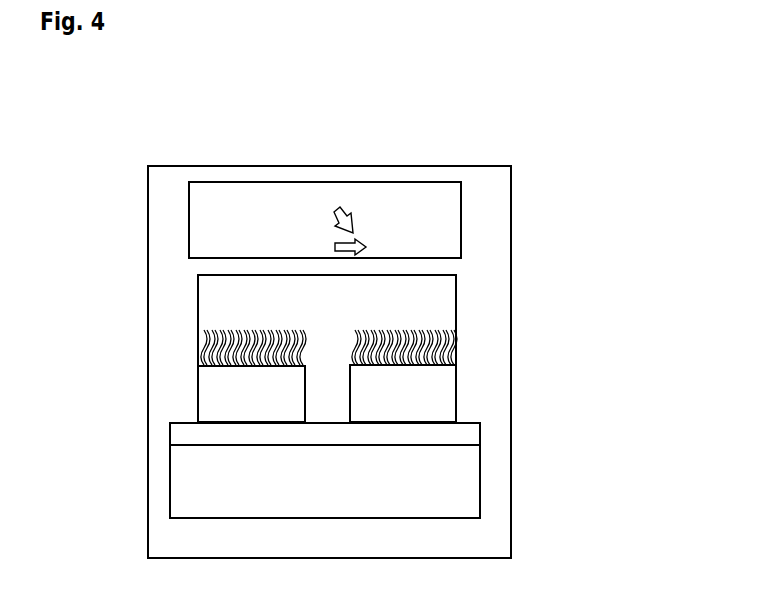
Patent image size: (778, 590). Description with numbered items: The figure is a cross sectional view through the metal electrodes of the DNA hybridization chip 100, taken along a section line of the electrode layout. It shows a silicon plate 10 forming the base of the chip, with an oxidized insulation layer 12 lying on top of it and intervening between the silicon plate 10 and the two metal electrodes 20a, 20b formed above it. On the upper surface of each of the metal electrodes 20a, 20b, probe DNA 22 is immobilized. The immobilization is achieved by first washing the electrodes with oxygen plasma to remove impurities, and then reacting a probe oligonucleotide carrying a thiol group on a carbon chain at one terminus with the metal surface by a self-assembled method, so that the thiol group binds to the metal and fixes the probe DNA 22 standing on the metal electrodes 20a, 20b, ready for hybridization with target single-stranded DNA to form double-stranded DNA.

The DNA hybridization chip 100 is at (342, 138).
The silicon plate 10 is at (463, 483).
The oxidized insulation layer 12 is at (463, 434).
The metal electrode 20a is at (205, 393).
The metal electrode 20b is at (445, 392).
The probe DNA 22 is at (200, 350).